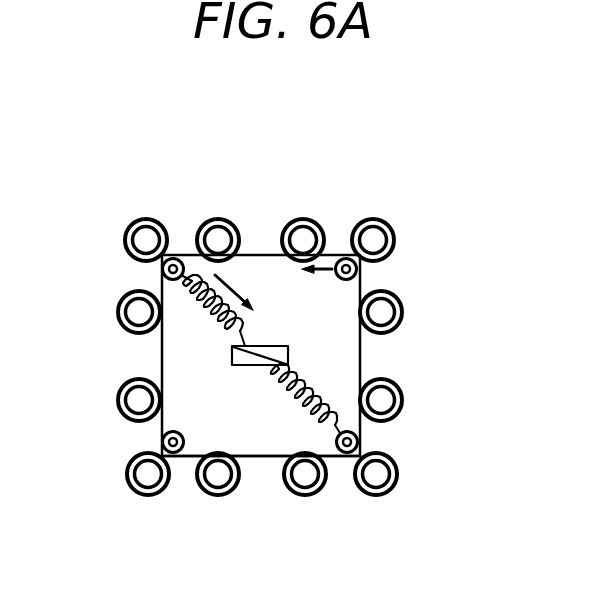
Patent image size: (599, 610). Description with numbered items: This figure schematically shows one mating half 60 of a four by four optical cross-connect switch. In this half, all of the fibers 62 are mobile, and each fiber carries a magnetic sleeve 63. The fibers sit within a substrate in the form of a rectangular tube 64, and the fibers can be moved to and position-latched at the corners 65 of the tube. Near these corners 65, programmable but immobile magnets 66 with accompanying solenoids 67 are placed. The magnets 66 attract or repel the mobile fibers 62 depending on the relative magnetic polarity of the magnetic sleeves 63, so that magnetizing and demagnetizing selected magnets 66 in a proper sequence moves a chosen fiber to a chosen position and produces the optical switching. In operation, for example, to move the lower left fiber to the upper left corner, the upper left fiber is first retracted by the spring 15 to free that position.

The mating half 60 is at (272, 325).
The solenoid 67 is at (182, 201).
The magnet 66 is at (231, 192).
The rectangular tube 64 is at (266, 301).
The magnetic sleeve 63 is at (261, 511).
The corner 65 is at (401, 349).
The fiber 62 is at (123, 432).
The spring 15 is at (305, 367).